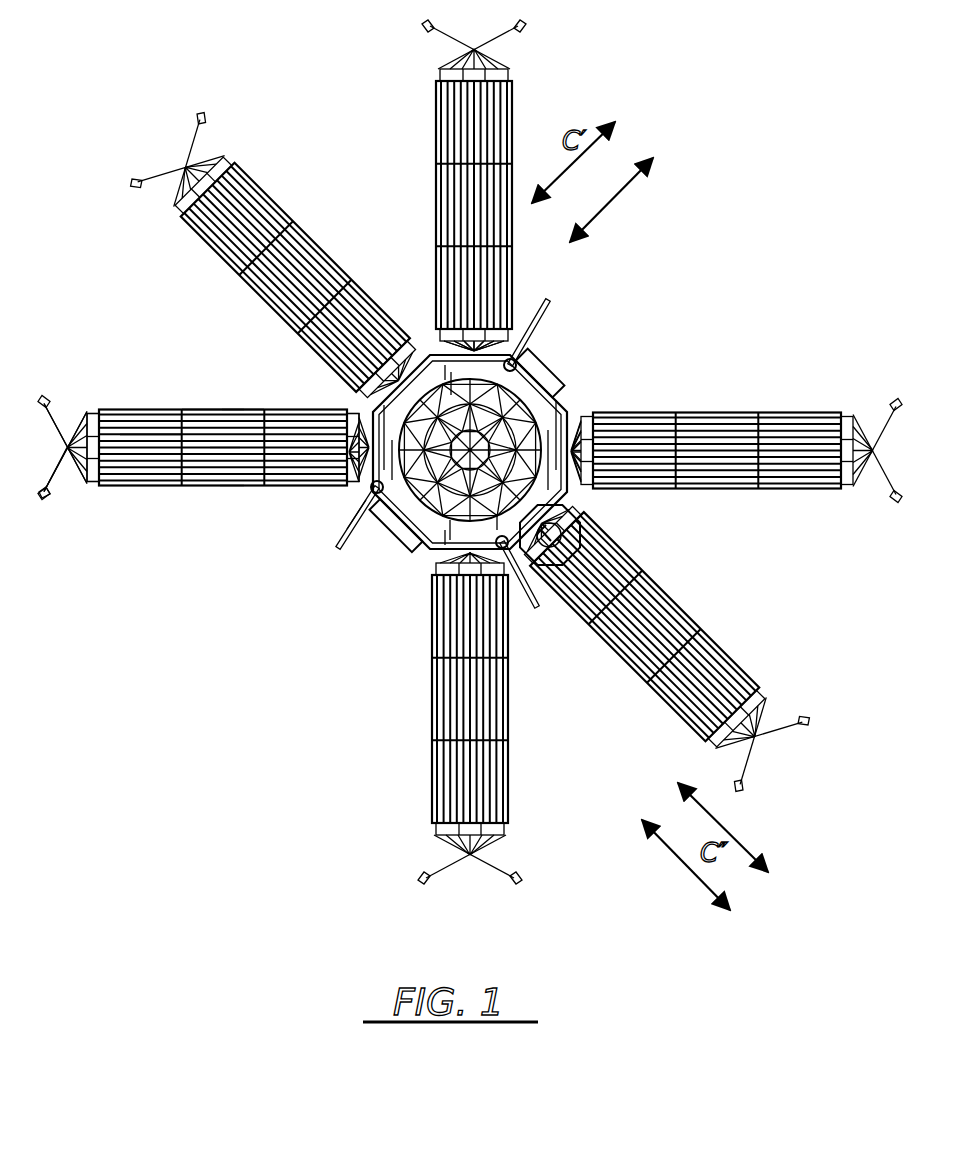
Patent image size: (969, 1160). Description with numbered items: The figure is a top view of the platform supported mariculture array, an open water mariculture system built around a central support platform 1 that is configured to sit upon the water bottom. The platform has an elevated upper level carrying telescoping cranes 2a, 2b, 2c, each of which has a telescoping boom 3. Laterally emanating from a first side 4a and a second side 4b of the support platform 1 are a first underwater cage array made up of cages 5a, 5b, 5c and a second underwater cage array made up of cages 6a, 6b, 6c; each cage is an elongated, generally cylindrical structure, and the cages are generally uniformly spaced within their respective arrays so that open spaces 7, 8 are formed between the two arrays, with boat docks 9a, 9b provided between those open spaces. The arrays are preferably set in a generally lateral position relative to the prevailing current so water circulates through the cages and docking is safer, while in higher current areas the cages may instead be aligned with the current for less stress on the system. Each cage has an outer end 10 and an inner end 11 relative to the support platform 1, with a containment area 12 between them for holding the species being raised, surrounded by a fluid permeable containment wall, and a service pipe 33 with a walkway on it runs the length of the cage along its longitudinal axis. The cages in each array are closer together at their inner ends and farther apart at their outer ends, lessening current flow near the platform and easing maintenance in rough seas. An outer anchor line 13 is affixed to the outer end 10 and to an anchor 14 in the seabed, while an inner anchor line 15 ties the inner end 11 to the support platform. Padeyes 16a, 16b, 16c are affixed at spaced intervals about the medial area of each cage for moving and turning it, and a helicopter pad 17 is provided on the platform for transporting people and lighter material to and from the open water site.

The central support platform 1 is at (547, 390).
The telescoping crane 2a is at (355, 552).
The telescoping crane 2b is at (540, 608).
The telescoping crane 2c is at (548, 300).
The telescoping boom 3 is at (345, 528).
The first side of the support platform 4a is at (440, 350).
The second side of the support platform 4b is at (585, 490).
The underwater cage 5a is at (438, 126).
The underwater cage 5b is at (228, 258).
The underwater cage 5c is at (105, 485).
The underwater cage 6a is at (778, 485).
The underwater cage 6b is at (655, 695).
The underwater cage 6c is at (436, 705).
The open space 7 is at (367, 678).
The open space 8 is at (649, 381).
The boat dock 9a is at (538, 360).
The boat dock 9b is at (388, 540).
The outer end 10 is at (88, 411).
The inner end 11 is at (347, 410).
The containment area 12 is at (200, 412).
The outer anchor line 13 is at (70, 448).
The anchor 14 is at (52, 492).
The inner anchor line 15 is at (360, 480).
The padeye 16a is at (225, 447).
The padeye 16b is at (232, 412).
The padeye 16c is at (230, 485).
The helicopter pad 17 is at (578, 533).
The service pipe 33 is at (152, 440).